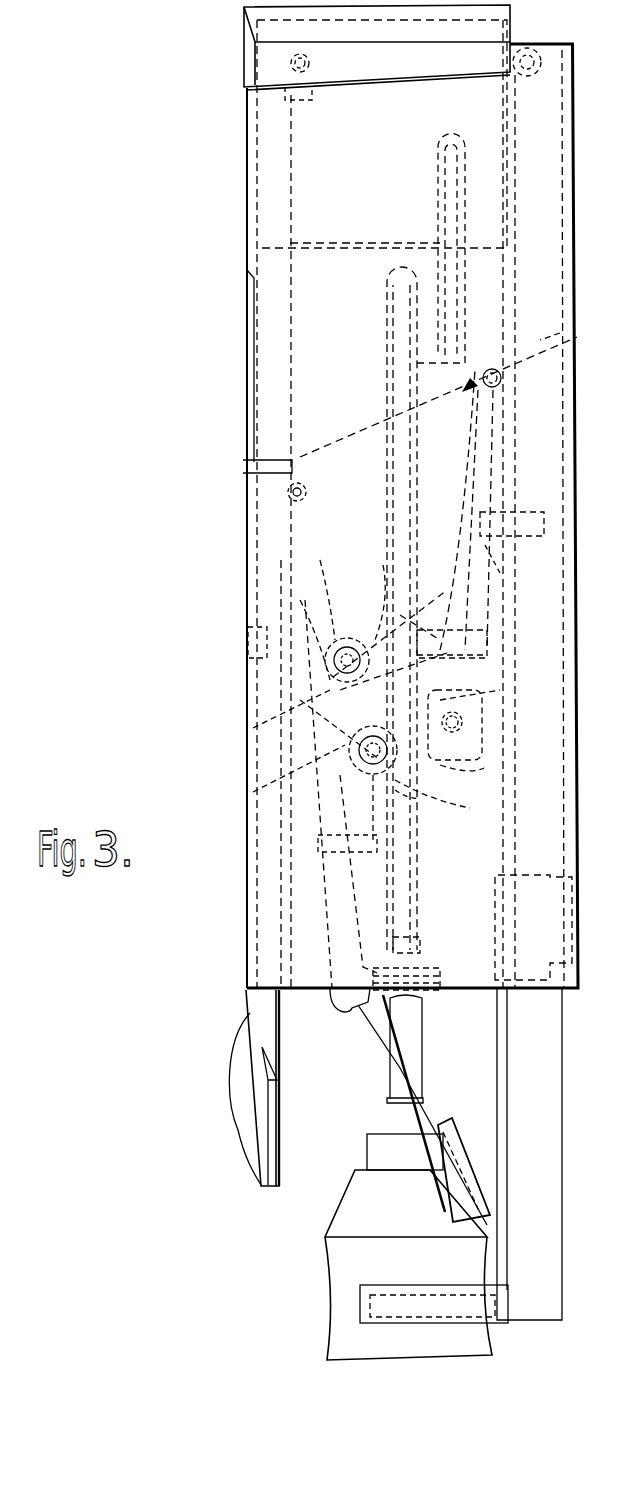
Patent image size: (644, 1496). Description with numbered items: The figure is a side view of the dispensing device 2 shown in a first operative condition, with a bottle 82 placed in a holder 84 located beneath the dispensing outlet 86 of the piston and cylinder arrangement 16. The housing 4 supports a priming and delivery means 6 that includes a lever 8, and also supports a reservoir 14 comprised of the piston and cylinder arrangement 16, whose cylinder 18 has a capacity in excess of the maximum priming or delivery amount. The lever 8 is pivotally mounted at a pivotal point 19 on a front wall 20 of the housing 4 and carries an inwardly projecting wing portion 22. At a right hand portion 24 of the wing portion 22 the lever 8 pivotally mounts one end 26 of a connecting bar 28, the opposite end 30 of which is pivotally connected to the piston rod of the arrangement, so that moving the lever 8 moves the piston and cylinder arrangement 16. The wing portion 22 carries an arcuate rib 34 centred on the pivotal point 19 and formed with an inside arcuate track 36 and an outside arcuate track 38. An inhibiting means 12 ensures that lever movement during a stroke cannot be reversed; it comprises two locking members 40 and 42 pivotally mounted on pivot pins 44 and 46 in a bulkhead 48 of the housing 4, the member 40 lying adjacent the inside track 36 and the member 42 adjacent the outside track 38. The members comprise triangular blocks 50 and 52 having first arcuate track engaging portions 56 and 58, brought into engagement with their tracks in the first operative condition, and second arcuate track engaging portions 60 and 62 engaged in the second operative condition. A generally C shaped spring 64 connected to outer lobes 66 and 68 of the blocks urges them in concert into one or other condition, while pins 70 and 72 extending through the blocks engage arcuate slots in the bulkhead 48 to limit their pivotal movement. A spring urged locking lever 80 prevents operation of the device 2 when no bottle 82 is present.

The dispensing device 2 is at (195, 290).
The housing 4 is at (407, 200).
The priming and delivery means 6 is at (178, 535).
The lever 8 is at (263, 1010).
The inhibiting means 12 is at (228, 733).
The reservoir 14 is at (445, 473).
The piston and cylinder arrangement 16 is at (500, 663).
The cylinder 18 is at (487, 630).
The pivotal mounting 19 is at (307, 492).
The front wall 20 is at (247, 165).
The wing portion 22 is at (362, 404).
The right hand portion 24 is at (560, 333).
The one end of connecting bar 26 is at (500, 406).
The connecting bar 28 is at (500, 496).
The opposite end of connecting bar 30 is at (508, 687).
The arcuate rib 34 is at (500, 573).
The inside arcuate track 36 is at (440, 572).
The outside arcuate track 38 is at (253, 792).
The locking member 40 is at (339, 598).
The locking member 42 is at (372, 842).
The pivot pin 44 is at (353, 630).
The pivot pin 46 is at (331, 848).
The bulkhead 48 is at (332, 343).
The triangular block 50 is at (340, 680).
The triangular block 52 is at (470, 808).
The first arcuate track engaging portion 56 is at (253, 728).
The first arcuate track engaging portion 58 is at (352, 750).
The second arcuate track engaging portion 60 is at (418, 606).
The second arcuate track engaging portion 62 is at (436, 752).
The C shaped spring 64 is at (484, 768).
The outer lobe 66 is at (318, 628).
The outer lobe 68 is at (420, 798).
The pin 70 is at (382, 565).
The pin 72 is at (464, 702).
The locking lever 80 is at (350, 1010).
The bottle 82 is at (332, 1262).
The holder 84 is at (440, 1300).
The dispensing outlet 86 is at (418, 1070).